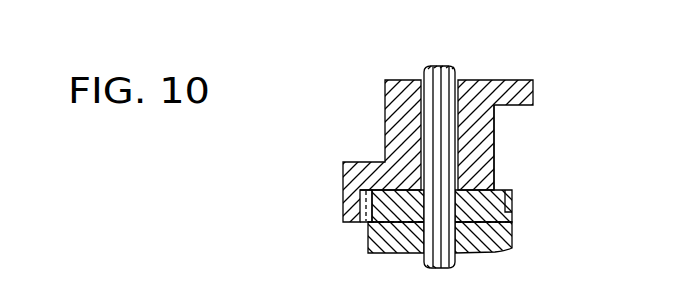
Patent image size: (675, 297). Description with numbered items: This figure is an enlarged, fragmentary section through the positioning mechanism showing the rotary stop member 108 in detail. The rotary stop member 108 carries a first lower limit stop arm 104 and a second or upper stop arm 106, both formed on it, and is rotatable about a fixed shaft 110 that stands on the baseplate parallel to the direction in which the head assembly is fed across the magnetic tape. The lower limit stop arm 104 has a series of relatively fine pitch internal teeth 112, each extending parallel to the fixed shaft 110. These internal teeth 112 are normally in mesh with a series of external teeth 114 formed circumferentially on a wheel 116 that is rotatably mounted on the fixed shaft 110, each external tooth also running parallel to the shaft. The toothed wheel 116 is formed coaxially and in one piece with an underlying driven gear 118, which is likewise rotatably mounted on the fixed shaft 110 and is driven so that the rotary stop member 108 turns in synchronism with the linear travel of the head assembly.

The first lower limit stop arm 104 is at (343, 173).
The second or upper stop arm 106 is at (515, 79).
The rotary stop member 108 is at (483, 158).
The fixed shaft 110 is at (440, 66).
The internal teeth 112 is at (360, 212).
The external teeth 114 is at (514, 192).
The wheel 116 is at (508, 212).
The driven gear 118 is at (502, 244).